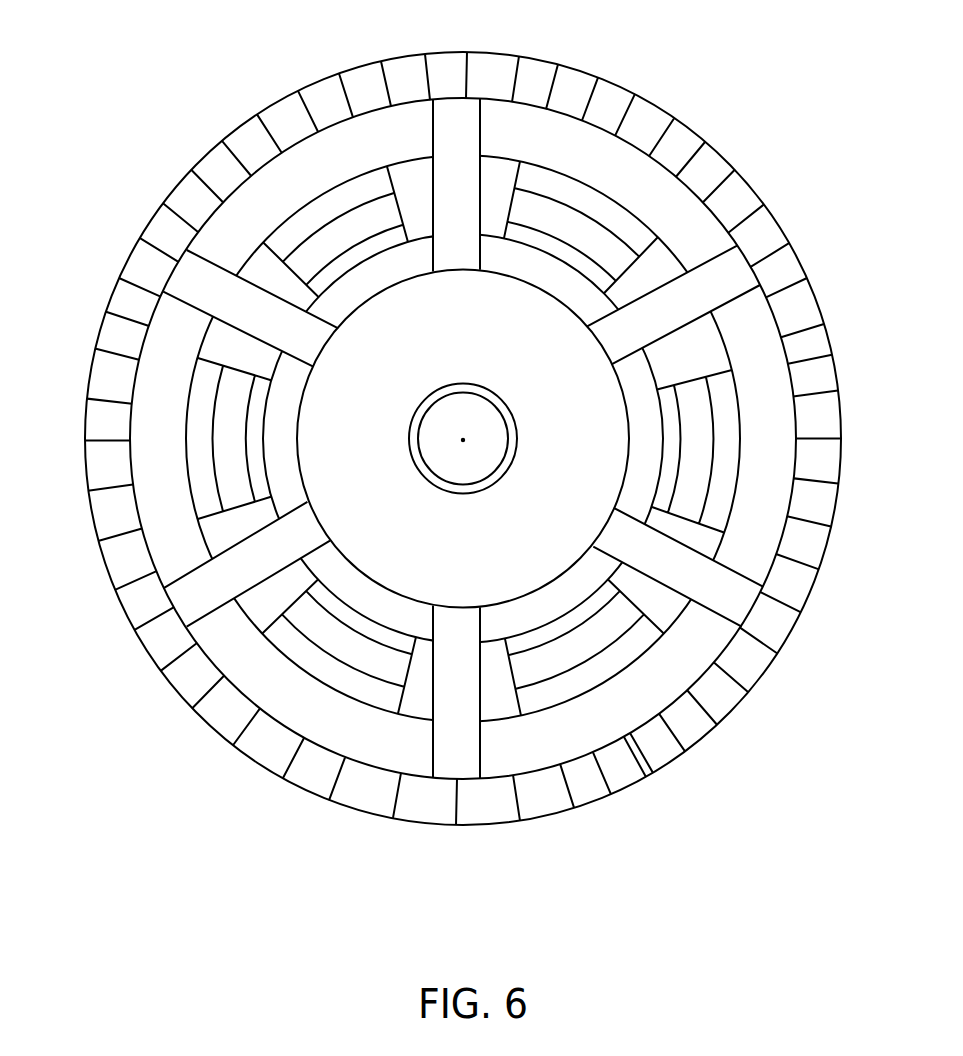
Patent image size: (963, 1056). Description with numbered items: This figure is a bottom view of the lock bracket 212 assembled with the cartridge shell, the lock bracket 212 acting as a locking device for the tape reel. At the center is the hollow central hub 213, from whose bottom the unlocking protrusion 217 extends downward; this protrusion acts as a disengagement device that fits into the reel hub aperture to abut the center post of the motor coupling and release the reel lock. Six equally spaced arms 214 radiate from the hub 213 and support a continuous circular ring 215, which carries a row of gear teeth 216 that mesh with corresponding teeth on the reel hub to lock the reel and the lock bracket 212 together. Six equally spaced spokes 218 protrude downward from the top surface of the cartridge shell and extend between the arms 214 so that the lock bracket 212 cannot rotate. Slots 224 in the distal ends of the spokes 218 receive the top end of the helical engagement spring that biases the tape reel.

The lock bracket 212 is at (469, 464).
The hollow central hub 213 is at (556, 422).
The arms 214 is at (455, 759).
The continuous circular ring 215 is at (770, 232).
The gear teeth 216 is at (611, 102).
The unlocking protrusion 217 is at (433, 443).
The spokes 218 is at (580, 700).
The slots 224 is at (600, 638).